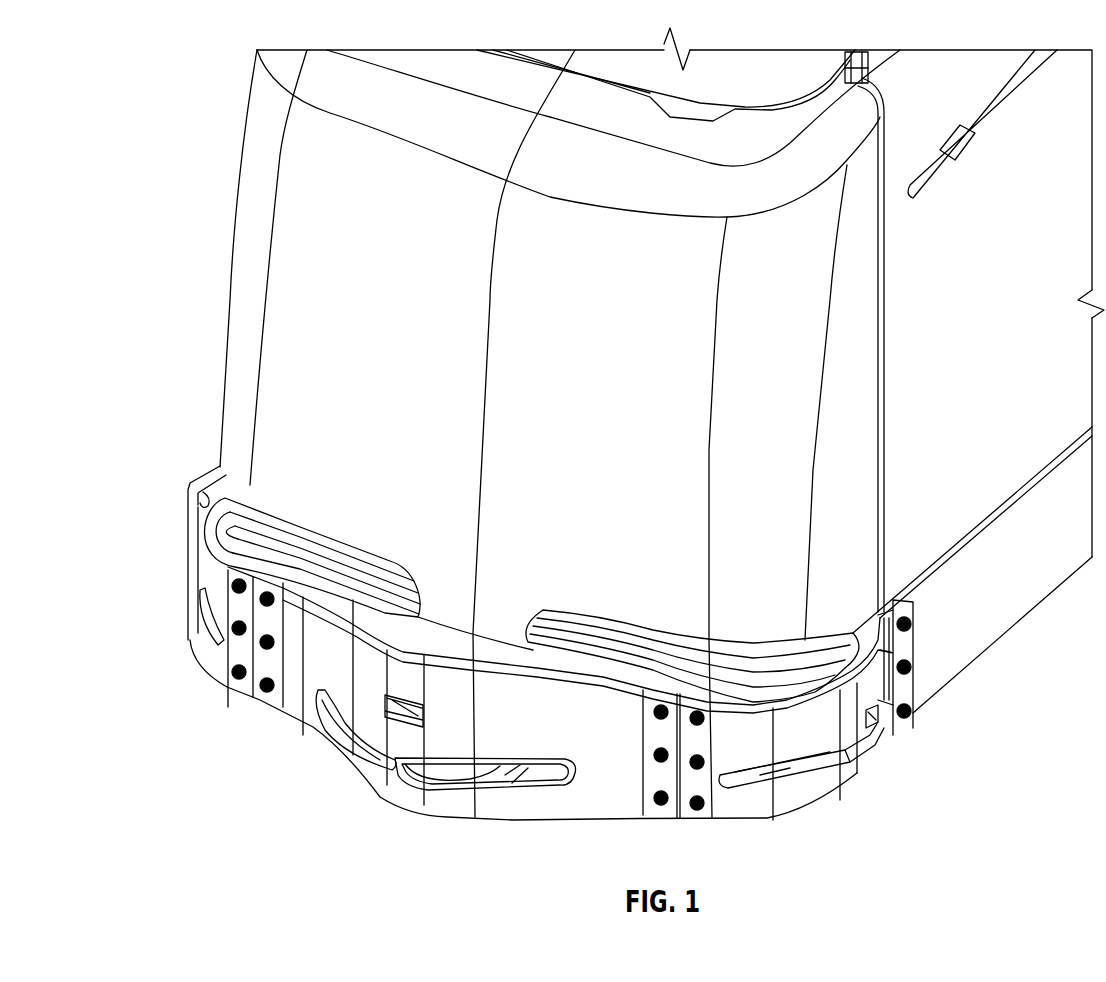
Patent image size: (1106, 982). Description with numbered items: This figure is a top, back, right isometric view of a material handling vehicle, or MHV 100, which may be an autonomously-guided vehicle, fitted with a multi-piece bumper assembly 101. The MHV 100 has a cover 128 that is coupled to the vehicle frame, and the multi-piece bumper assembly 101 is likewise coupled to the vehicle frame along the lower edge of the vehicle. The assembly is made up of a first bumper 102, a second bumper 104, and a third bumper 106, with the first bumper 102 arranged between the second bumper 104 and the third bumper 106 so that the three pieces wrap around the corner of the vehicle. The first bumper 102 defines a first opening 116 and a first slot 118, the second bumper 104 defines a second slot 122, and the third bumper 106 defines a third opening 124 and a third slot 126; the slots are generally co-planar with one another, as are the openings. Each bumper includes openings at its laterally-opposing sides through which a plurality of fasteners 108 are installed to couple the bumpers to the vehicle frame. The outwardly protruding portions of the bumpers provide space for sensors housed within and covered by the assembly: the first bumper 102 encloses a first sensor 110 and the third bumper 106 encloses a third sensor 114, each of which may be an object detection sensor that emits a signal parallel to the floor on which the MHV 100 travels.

The MHV 100 is at (452, 72).
The multi-piece bumper assembly 101 is at (186, 759).
The first bumper 102 is at (417, 806).
The second bumper 104 is at (210, 500).
The third bumper 106 is at (873, 770).
The fasteners 108 is at (973, 747).
The first sensor 110 is at (393, 760).
The third sensor 114 is at (870, 760).
The first opening 116 is at (385, 712).
The first slot 118 is at (525, 787).
The second slot 122 is at (207, 627).
The third opening 124 is at (882, 720).
The third slot 126 is at (803, 780).
The cover 128 is at (295, 163).